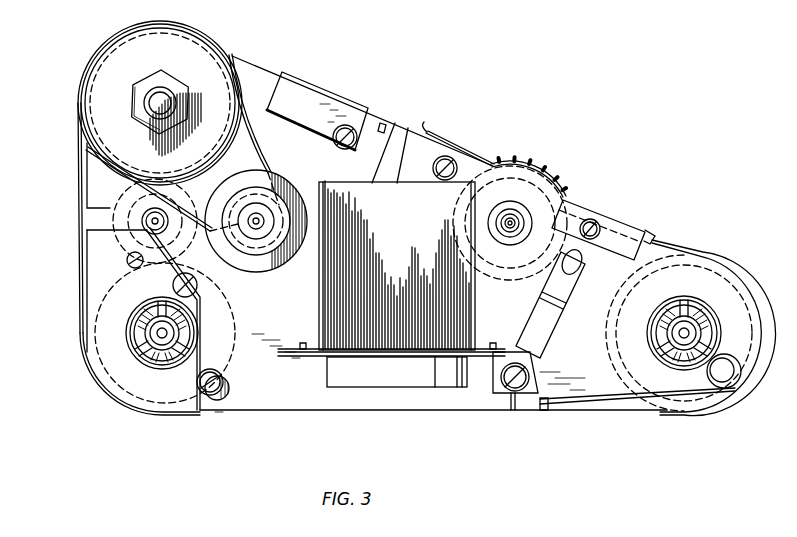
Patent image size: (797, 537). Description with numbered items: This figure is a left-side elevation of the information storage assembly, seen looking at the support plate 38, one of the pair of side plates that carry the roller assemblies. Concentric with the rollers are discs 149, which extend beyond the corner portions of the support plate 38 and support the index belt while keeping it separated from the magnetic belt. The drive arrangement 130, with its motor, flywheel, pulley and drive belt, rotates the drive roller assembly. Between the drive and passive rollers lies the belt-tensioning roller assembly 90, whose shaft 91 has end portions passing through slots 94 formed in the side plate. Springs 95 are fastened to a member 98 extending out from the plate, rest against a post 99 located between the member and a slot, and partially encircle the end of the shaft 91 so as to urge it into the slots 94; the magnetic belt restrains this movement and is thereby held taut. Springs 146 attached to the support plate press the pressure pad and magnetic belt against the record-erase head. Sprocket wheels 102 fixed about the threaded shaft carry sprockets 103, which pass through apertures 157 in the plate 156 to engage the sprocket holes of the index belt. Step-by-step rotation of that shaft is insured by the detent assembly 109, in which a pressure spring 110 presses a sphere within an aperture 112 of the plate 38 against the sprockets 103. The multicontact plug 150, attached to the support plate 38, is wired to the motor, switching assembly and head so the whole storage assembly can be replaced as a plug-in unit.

The discs 149 is at (212, 37).
The drive arrangement 130 is at (258, 80).
The belt-tensioning roller assembly 90 is at (115, 190).
The slots 94 is at (97, 230).
The shaft 91 is at (147, 227).
The springs 95 is at (203, 285).
The post 99 is at (198, 297).
The member 98 is at (225, 390).
The plate 156 is at (407, 117).
The apertures 157 is at (438, 138).
The sprockets 103 is at (538, 165).
The sprocket wheels 102 is at (555, 180).
The aperture 112 is at (578, 258).
The pressure spring 110 is at (553, 323).
The detent assembly 109 is at (527, 395).
The support plate 38 is at (735, 307).
The springs 146 is at (642, 397).
The multicontact plug 150 is at (385, 385).